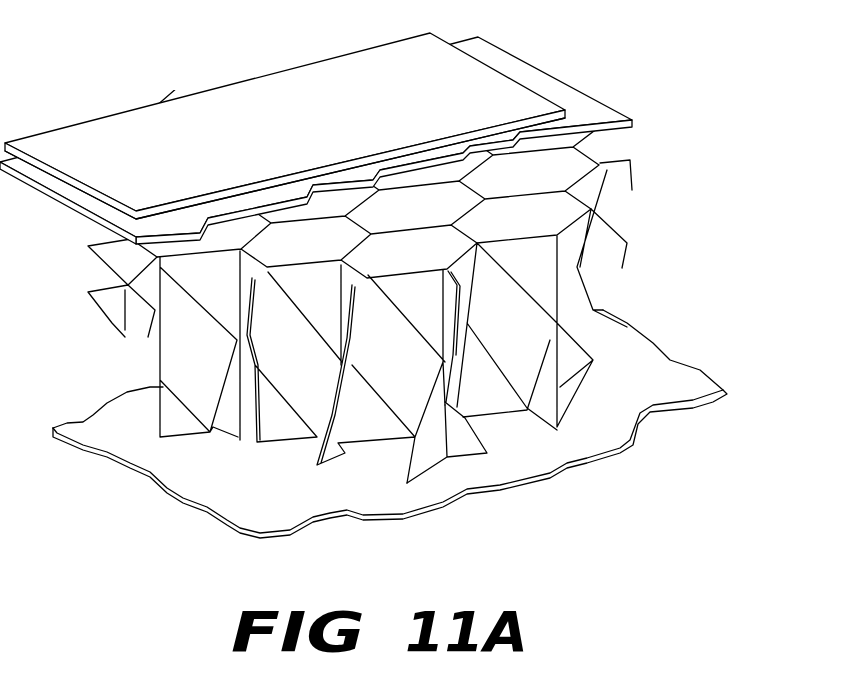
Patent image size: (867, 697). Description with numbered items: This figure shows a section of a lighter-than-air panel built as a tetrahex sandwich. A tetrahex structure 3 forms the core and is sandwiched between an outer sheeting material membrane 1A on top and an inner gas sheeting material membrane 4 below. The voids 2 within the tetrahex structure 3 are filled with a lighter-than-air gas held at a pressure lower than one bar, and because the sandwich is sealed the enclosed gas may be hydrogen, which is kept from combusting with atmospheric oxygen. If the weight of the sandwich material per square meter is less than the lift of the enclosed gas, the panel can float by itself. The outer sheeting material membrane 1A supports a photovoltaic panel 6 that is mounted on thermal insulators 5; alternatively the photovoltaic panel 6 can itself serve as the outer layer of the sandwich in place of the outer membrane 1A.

The outer sheeting material membrane 1A is at (560, 67).
The voids 2 is at (330, 236).
The tetrahex structure 3 is at (438, 190).
The inner gas sheeting material membrane 4 is at (560, 465).
The thermal insulators 5 is at (160, 218).
The photovoltaic panel 6 is at (307, 72).